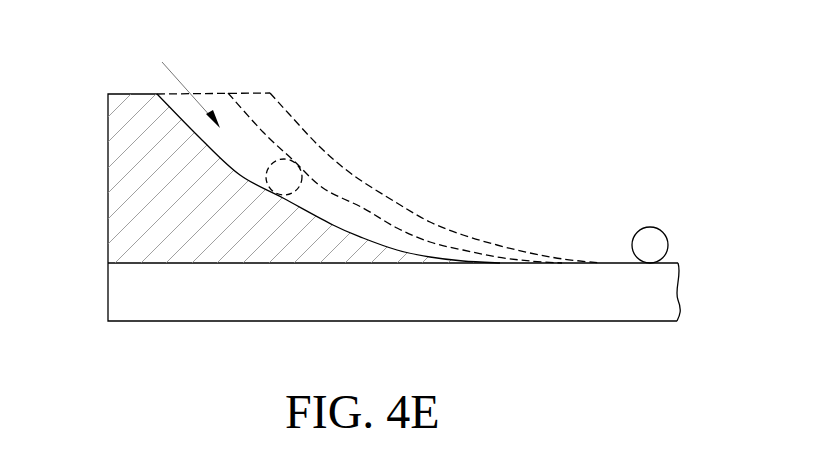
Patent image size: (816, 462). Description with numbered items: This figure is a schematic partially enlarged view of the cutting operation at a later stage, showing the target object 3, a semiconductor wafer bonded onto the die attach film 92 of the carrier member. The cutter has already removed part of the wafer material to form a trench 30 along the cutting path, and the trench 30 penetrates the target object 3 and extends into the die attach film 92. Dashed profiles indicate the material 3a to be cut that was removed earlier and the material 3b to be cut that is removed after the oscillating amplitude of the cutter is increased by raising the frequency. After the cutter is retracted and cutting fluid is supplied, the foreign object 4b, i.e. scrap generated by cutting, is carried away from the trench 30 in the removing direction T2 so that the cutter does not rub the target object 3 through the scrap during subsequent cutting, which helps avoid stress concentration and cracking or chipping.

The target object 3 is at (117, 202).
The trench 30 is at (203, 135).
The material to be cut 3a is at (353, 175).
The material to be cut 3b is at (263, 133).
The foreign object 4b is at (293, 170).
The die attach film 92 is at (116, 292).
The removing direction of scrap T2 is at (178, 75).